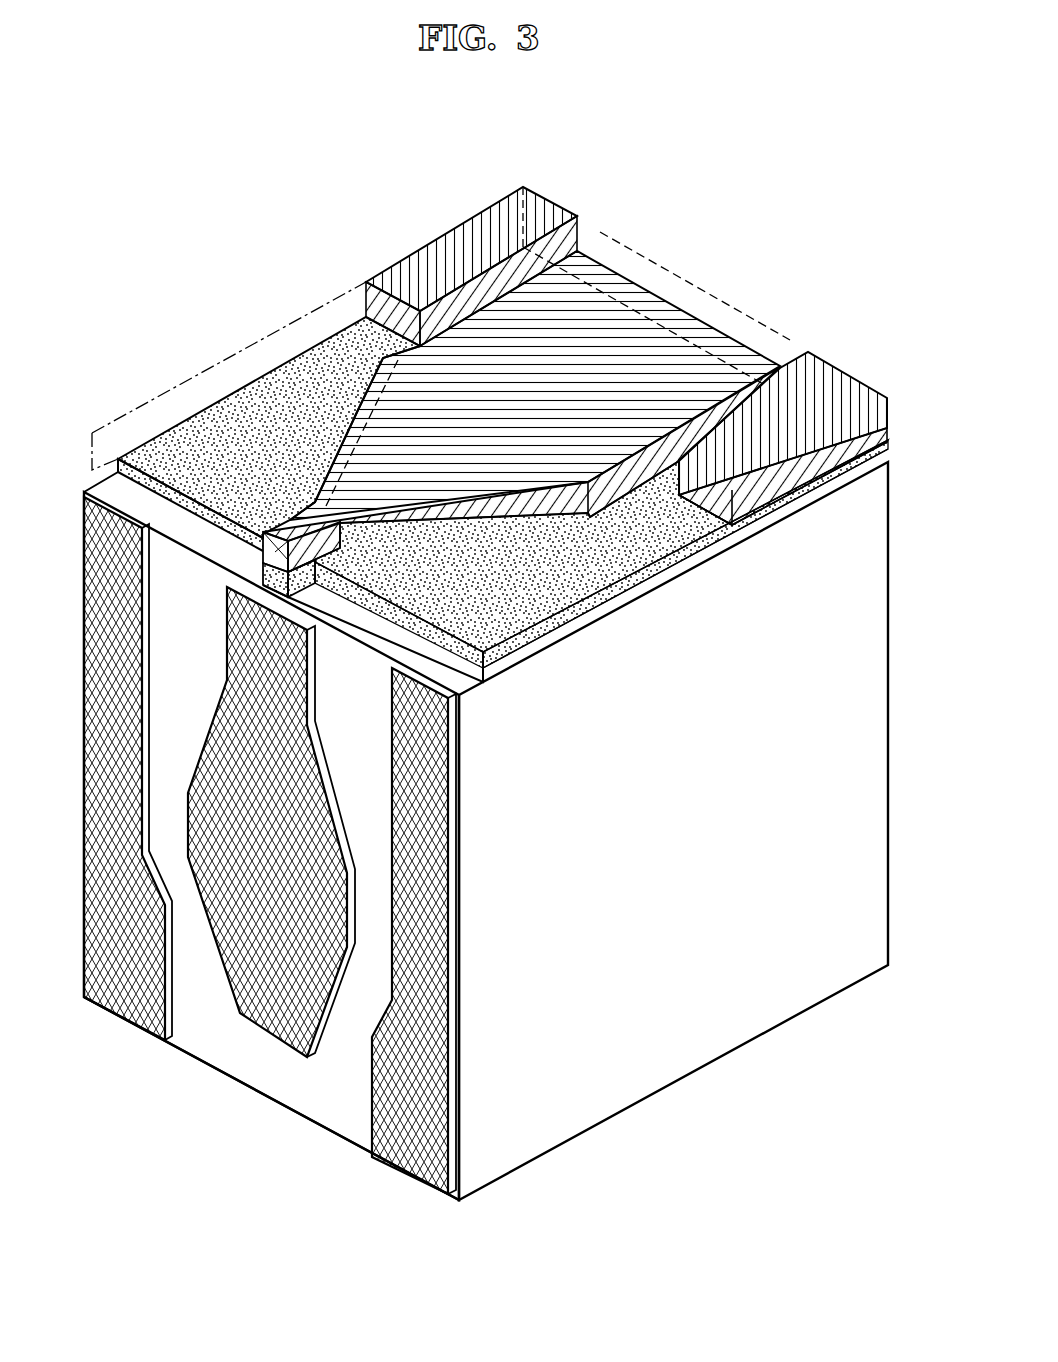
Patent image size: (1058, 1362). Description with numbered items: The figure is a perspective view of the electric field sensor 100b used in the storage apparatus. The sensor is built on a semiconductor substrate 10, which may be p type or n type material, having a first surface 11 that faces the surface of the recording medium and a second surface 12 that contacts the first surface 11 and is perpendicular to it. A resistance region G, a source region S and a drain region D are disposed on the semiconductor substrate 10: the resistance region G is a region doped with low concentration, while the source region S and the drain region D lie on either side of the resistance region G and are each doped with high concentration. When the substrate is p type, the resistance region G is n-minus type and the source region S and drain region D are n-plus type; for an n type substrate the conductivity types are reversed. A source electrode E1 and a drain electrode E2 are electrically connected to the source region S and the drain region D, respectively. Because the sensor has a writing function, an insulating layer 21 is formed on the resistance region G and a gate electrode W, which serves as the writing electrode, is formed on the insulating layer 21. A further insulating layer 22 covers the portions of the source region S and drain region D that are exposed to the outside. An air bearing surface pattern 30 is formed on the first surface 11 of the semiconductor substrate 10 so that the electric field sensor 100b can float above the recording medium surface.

The electric field sensor 100b is at (820, 243).
The semiconductor substrate 10 is at (720, 998).
The first surface 11 is at (186, 684).
The second surface 12 is at (172, 519).
The insulating layer 21 is at (290, 568).
The insulating layer 22 is at (330, 318).
The air bearing surface (ABS) pattern 30 is at (400, 1093).
The source region S is at (284, 376).
The drain region D is at (677, 570).
The resistance region G is at (233, 614).
The gate electrode (writing electrode) W is at (688, 306).
The source electrode E1 is at (534, 222).
The drain electrode E2 is at (848, 407).